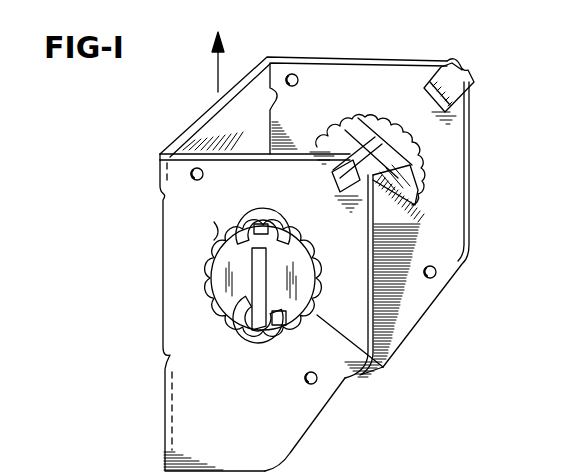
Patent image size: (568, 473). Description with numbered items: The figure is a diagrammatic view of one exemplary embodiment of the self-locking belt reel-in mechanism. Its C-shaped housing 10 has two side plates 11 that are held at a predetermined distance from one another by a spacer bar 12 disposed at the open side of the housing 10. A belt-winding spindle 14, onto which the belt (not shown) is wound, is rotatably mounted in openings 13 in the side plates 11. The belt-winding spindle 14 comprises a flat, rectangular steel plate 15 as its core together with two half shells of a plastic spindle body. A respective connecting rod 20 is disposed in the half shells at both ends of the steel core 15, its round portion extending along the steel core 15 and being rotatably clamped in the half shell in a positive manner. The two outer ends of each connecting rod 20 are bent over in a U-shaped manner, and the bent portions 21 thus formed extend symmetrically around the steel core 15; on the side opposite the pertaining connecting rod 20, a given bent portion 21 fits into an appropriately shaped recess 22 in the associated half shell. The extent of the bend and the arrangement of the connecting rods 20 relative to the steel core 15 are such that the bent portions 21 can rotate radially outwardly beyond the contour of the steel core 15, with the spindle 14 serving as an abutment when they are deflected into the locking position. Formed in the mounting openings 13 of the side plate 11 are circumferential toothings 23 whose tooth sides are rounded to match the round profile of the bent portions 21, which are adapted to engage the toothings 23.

The C-shaped housing 10 is at (203, 118).
The side plates 11 is at (353, 66).
The spacer bar 12 is at (452, 78).
The openings 13 is at (368, 352).
The belt-winding spindle 14 is at (424, 222).
The steel plate 15 is at (258, 278).
The connecting rod 20 is at (215, 228).
The bent portions 21 is at (245, 342).
The recess 22 is at (305, 238).
The circumferential toothings 23 is at (424, 168).